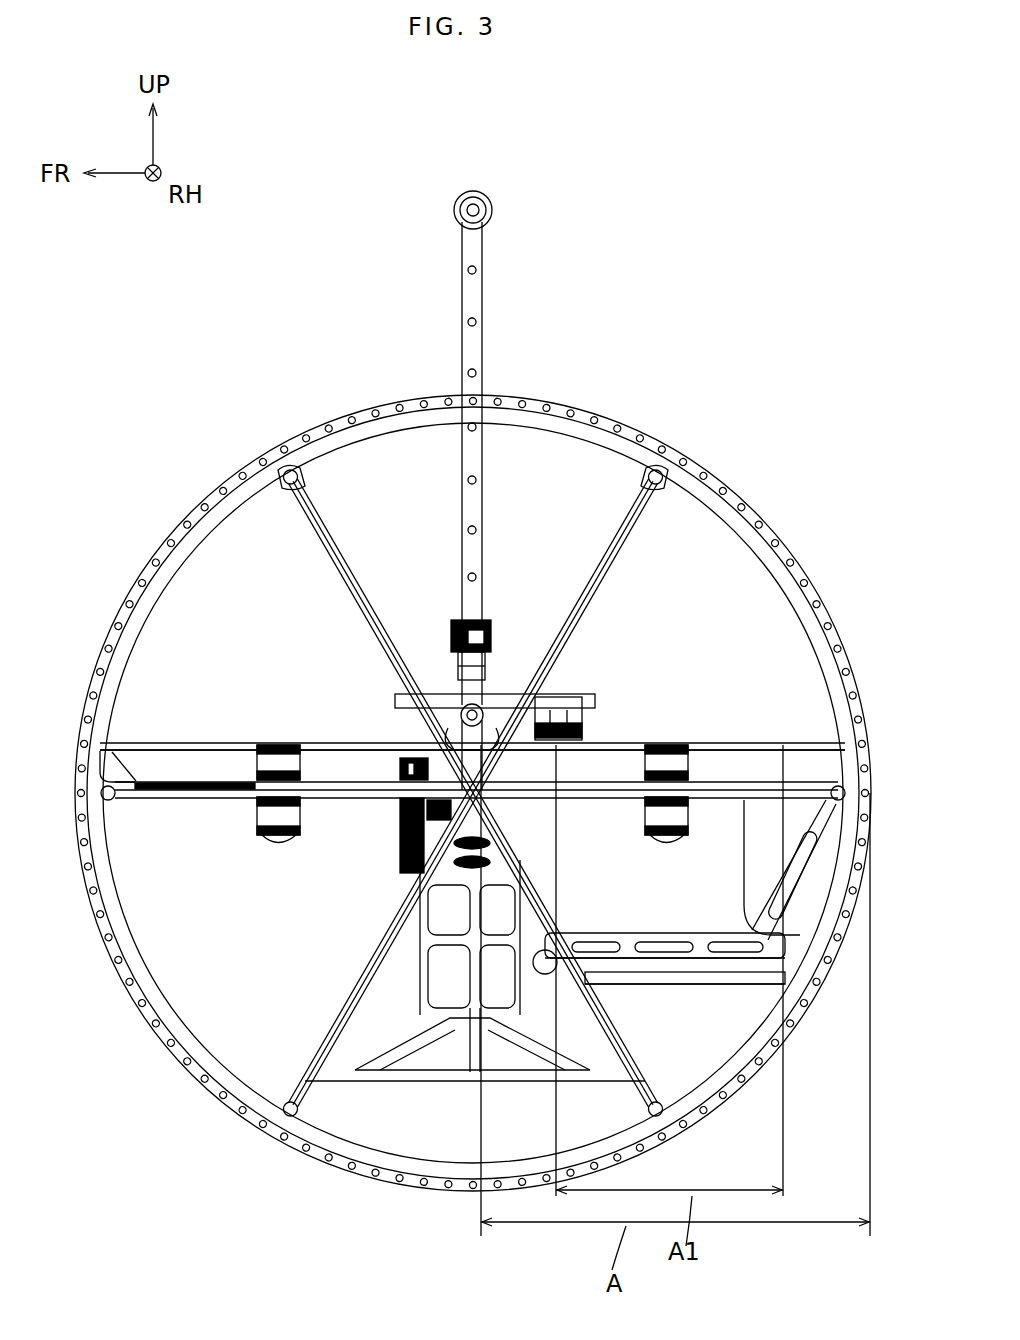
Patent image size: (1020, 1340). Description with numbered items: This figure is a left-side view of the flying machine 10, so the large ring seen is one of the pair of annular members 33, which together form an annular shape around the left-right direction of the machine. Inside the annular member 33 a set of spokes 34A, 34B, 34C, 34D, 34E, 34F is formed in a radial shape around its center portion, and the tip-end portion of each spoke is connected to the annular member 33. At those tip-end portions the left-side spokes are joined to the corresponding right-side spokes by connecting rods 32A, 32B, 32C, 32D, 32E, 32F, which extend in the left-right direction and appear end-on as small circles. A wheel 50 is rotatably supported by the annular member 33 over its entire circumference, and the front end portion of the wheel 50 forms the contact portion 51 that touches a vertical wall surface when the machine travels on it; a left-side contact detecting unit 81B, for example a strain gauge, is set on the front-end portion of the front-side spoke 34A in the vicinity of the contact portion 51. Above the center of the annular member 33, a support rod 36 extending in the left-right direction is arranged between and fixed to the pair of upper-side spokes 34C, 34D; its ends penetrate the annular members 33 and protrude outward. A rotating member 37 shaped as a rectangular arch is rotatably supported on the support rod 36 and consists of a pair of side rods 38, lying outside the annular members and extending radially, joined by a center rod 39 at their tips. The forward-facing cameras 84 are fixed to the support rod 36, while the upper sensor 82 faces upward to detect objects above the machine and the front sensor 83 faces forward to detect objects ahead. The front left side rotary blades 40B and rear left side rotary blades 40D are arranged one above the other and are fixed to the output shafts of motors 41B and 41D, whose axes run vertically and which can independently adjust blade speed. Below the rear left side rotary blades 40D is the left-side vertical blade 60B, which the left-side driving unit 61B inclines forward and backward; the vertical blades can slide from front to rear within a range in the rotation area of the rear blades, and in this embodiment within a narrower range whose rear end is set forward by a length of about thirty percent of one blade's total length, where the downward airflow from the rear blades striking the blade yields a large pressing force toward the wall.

The flying machine 10 is at (652, 312).
The connecting rod 32A is at (100, 800).
The connecting rod 32B is at (846, 786).
The connecting rod 32C is at (288, 468).
The connecting rod 32D is at (660, 468).
The connecting rod 32E is at (288, 1118).
The connecting rod 32F is at (662, 1118).
The annular member 33 is at (188, 548).
The front-side spoke 34A is at (184, 800).
The spoke 34B is at (745, 800).
The upper-side spoke 34C is at (342, 554).
The upper-side spoke 34D is at (612, 560).
The spoke 34E is at (340, 1016).
The spoke 34F is at (636, 1066).
The support rod 36 is at (458, 716).
The rotating member 37 is at (480, 322).
The side rod 38 is at (486, 262).
The center rod 39 is at (492, 205).
The front left side rotary blades 40B is at (264, 744).
The rear left side rotary blades 40D is at (700, 744).
The motor 41B is at (303, 765).
The motor 41D is at (690, 765).
The wheel 50 is at (205, 490).
The contact portion 51 is at (78, 770).
The left-side vertical blade 60B is at (578, 982).
The left-side driving unit 61B is at (600, 932).
The left-side contact detecting unit 81B is at (222, 744).
The upper sensor 82 is at (585, 720).
The front sensor 83 is at (416, 880).
The camera 84 is at (490, 640).